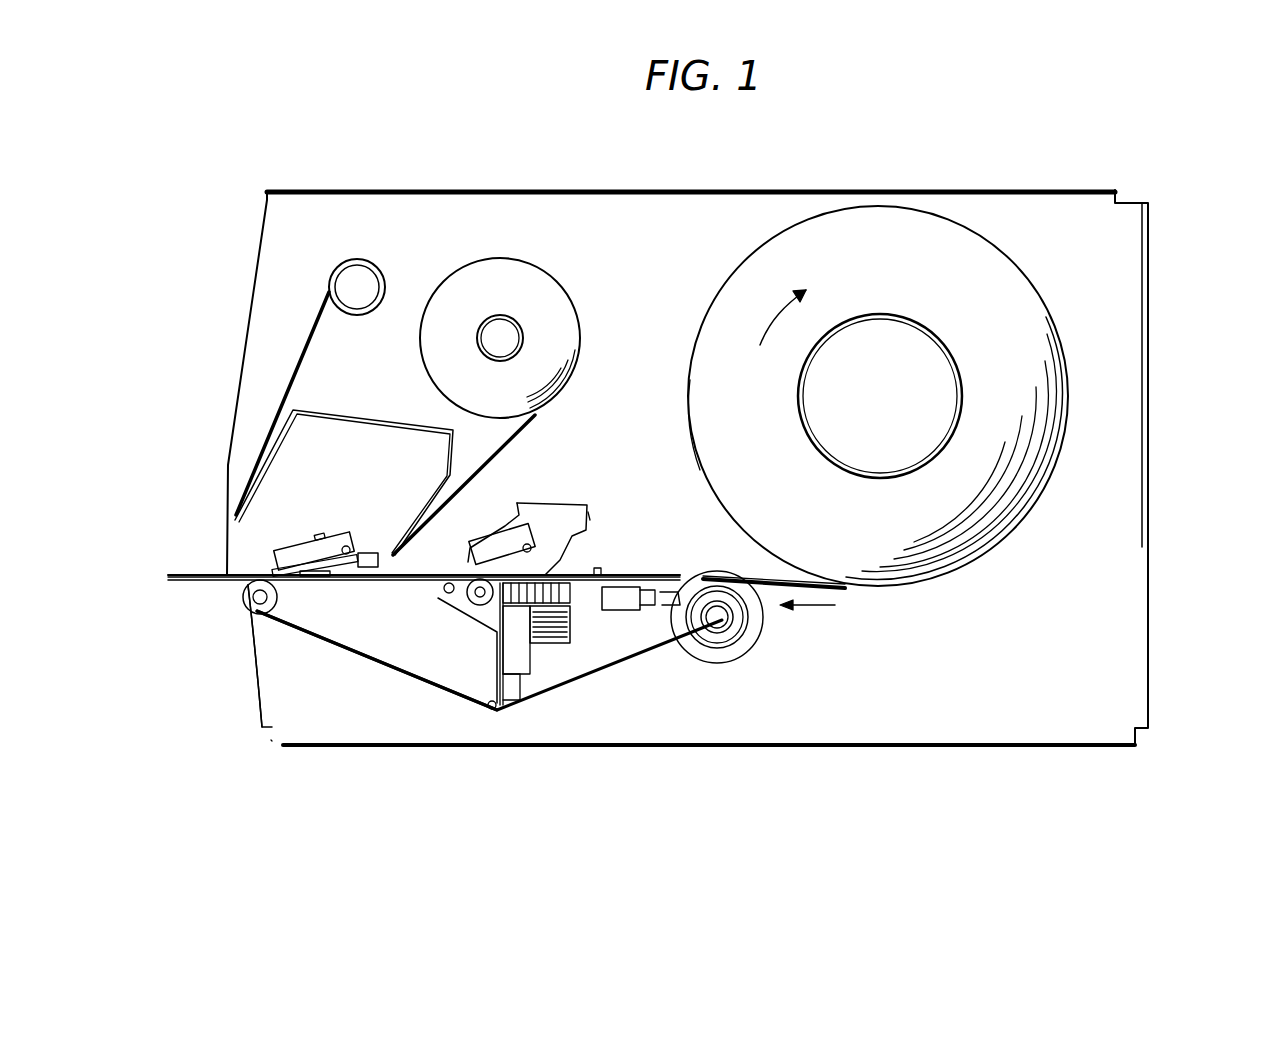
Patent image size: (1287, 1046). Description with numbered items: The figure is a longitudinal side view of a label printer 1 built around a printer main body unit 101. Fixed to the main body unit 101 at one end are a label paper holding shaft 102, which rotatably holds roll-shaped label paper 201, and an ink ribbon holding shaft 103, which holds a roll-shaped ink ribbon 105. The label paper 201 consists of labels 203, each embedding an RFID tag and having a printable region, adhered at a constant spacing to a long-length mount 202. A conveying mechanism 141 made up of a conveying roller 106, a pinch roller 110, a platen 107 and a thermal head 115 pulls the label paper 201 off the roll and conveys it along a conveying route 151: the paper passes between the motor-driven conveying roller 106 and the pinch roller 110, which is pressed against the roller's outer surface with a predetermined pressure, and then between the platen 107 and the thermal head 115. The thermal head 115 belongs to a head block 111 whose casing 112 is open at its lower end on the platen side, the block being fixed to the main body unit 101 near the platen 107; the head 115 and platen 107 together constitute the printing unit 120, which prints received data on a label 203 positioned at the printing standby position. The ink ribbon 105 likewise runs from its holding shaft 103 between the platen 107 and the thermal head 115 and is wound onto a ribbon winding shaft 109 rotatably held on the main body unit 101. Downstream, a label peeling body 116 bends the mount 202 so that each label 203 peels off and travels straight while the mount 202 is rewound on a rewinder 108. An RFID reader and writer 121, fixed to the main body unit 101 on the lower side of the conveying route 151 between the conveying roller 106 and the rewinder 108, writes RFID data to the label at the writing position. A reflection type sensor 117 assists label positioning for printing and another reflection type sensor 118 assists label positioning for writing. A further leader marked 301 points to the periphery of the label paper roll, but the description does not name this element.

The label printer 1 is at (1195, 208).
The printer main body unit 101 is at (652, 237).
The label paper holding shaft 102 is at (876, 335).
The ink ribbon holding shaft 103 is at (494, 325).
The ink ribbon 105 is at (528, 275).
The conveying roller 106 is at (472, 612).
The platen 107 is at (256, 630).
The rewinder 108 is at (722, 620).
The ribbon winding shaft 109 is at (353, 262).
The pinch roller 110 is at (472, 552).
The head block 111 is at (263, 430).
The casing 112 is at (248, 465).
The thermal head 115 is at (275, 550).
The label peeling body 116 is at (243, 603).
The reflection type sensor 117 is at (360, 598).
The reflection type sensor 118 is at (553, 625).
The printing unit 120 is at (262, 655).
The RFID reader and writer 121 is at (622, 603).
The conveying mechanism 141 is at (290, 598).
The conveying route 151 is at (683, 606).
The label paper 201 is at (972, 250).
The mount 202 is at (380, 583).
The label 203 is at (212, 573).
The roll outer surface 301 is at (690, 352).